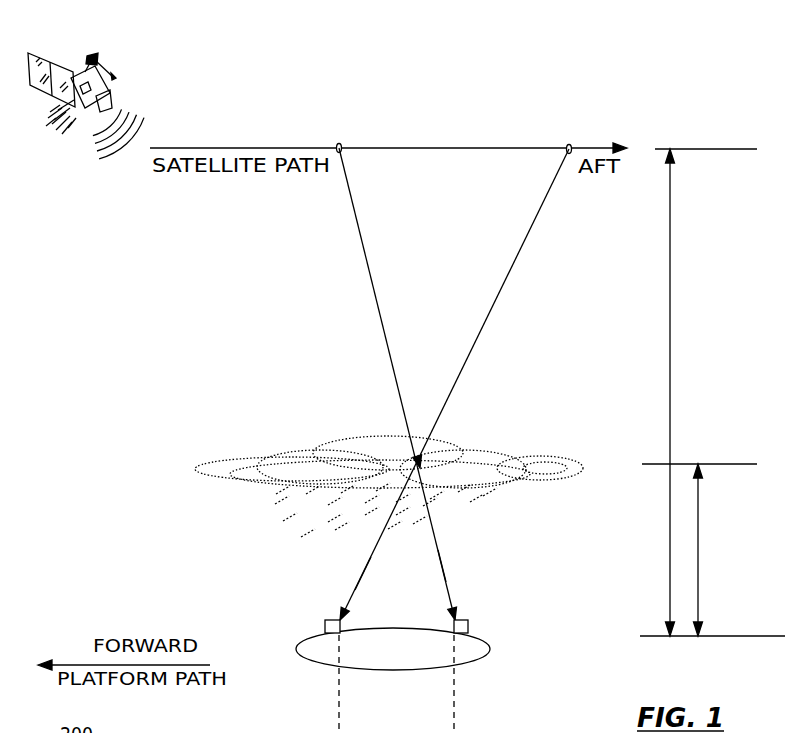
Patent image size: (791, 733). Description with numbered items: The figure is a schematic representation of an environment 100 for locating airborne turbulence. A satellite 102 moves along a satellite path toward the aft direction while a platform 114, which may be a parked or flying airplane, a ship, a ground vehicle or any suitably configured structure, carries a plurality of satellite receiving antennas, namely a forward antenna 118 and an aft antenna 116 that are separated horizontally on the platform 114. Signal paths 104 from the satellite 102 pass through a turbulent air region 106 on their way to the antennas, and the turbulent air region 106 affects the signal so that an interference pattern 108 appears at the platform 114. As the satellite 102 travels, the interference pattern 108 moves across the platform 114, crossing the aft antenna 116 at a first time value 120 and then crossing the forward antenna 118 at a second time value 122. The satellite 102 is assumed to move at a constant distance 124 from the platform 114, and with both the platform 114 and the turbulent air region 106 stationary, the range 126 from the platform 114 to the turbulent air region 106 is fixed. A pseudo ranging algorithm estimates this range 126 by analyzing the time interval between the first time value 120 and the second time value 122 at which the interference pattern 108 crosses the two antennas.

The environment 100 is at (318, 50).
The satellite 102 is at (68, 73).
The signal path 104 is at (359, 230).
The turbulent air region 106 is at (290, 450).
The interference pattern 108 is at (370, 557).
The platform 114 is at (490, 650).
The aft antenna 116 is at (469, 622).
The forward antenna 118 is at (324, 632).
The first time value 120 is at (343, 148).
The second time value 122 is at (572, 148).
The distance 124 is at (670, 420).
The range 126 is at (698, 550).